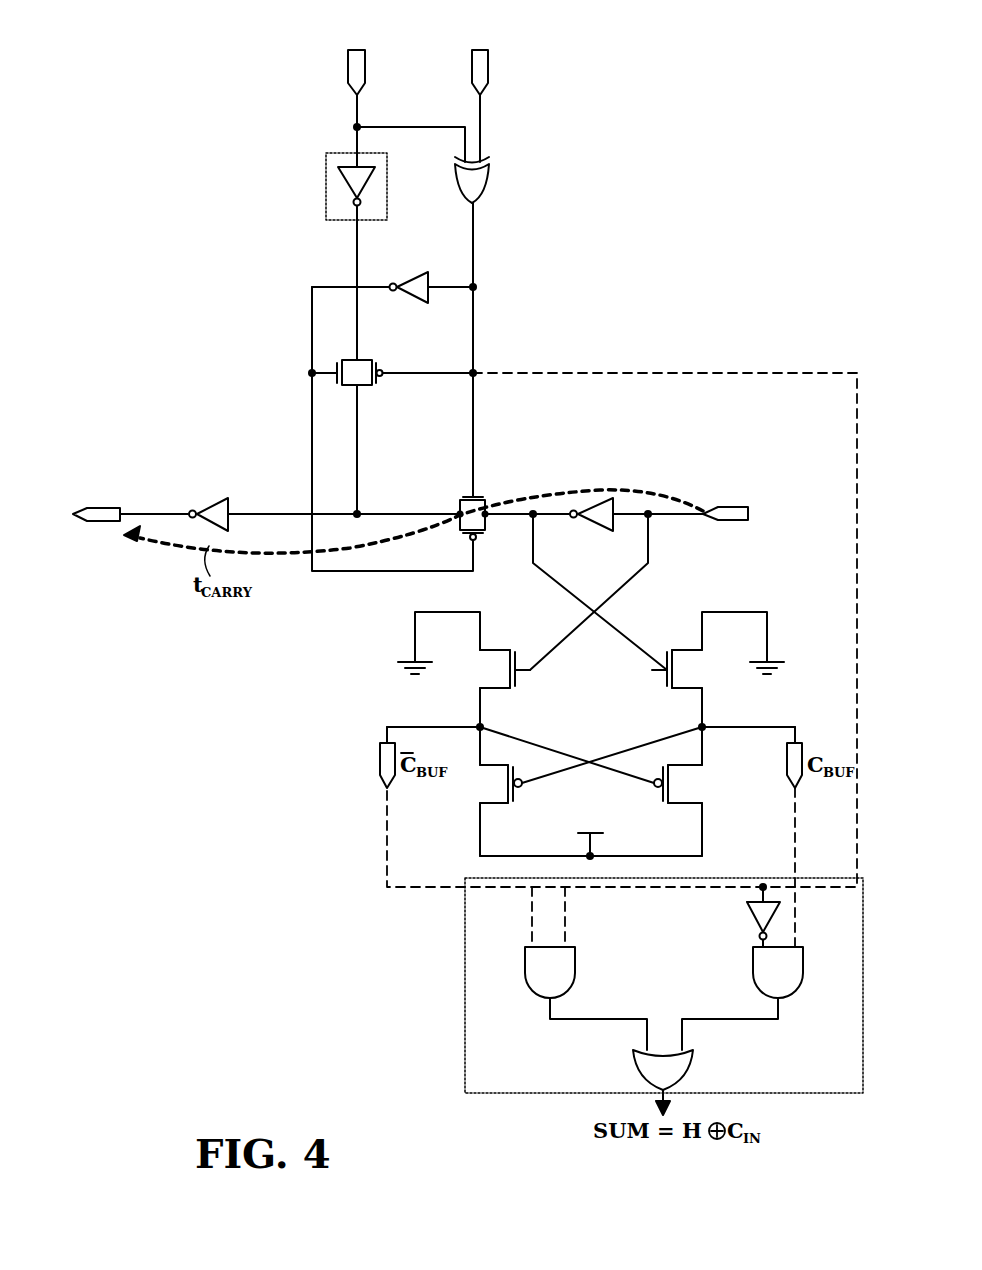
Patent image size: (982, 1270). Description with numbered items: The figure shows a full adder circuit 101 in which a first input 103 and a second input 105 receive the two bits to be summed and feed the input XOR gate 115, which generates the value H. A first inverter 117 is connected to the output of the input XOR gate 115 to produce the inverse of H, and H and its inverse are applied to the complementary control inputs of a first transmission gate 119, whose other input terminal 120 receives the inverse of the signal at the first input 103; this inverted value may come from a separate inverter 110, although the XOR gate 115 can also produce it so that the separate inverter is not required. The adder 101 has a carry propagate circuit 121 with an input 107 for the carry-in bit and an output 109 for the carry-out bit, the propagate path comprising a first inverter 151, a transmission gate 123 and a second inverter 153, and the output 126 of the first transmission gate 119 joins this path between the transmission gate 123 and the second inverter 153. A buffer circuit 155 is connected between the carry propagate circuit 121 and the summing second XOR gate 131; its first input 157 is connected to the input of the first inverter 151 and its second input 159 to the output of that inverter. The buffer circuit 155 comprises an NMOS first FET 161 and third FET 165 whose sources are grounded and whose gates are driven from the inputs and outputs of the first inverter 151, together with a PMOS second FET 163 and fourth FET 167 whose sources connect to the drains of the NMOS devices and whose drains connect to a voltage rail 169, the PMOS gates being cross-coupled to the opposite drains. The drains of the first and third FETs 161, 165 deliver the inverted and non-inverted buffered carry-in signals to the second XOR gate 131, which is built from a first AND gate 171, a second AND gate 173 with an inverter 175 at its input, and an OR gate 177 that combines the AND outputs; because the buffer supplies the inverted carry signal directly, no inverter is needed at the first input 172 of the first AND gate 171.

The full adder circuit 101 is at (624, 106).
The first input 103 is at (355, 49).
The second input 105 is at (483, 49).
The input 107 is at (733, 506).
The output 109 is at (103, 508).
The separate inverter 110 is at (327, 165).
The input XOR gate 115 is at (490, 174).
The first inverter 117 is at (420, 272).
The first transmission gate 119 is at (347, 365).
The other input terminal 120 is at (358, 358).
The carry propagate circuit 121 is at (560, 477).
The transmission gate 123 is at (480, 497).
The output 126 is at (357, 388).
The second XOR gate 131 is at (465, 1008).
The first inverter 151 is at (602, 497).
The second inverter 153 is at (215, 507).
The buffer circuit 155 is at (608, 688).
The first input 157 is at (650, 516).
The second input 159 is at (535, 516).
The first FET 161 is at (517, 682).
The second FET 163 is at (513, 803).
The third FET 165 is at (665, 682).
The fourth FET 167 is at (663, 803).
The voltage rail 169 is at (702, 857).
The first AND gate 171 is at (575, 958).
The first input 172 is at (532, 945).
The second AND gate 173 is at (753, 958).
The inverter 175 is at (750, 917).
The OR gate 177 is at (693, 1068).